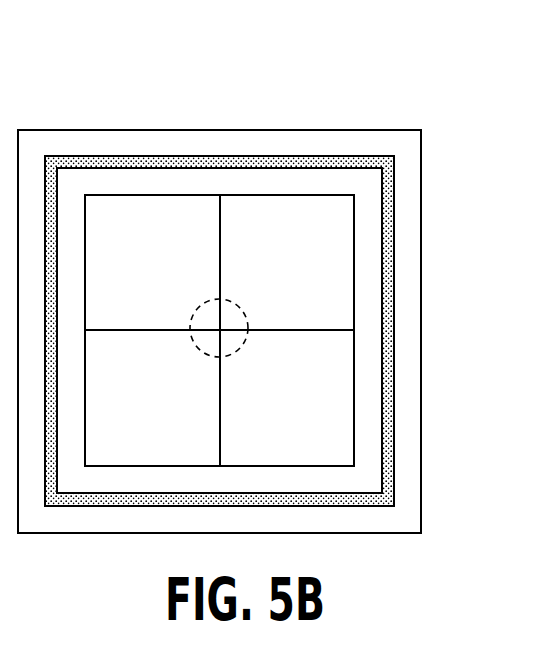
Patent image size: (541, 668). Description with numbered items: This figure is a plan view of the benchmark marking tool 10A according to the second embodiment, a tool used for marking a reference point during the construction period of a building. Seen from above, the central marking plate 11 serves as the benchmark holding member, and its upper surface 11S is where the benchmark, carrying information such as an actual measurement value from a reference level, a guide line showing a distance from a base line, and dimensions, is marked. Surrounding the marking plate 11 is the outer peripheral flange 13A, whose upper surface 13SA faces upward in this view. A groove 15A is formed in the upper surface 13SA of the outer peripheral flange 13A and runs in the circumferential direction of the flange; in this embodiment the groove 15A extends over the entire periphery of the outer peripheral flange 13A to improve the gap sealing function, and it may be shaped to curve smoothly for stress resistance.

The benchmark marking tool 10A is at (341, 84).
The marking plate 11 is at (354, 261).
The upper surface 11S is at (306, 283).
The outer peripheral flange 13A is at (259, 331).
The upper surface 13SA is at (413, 341).
The groove 15A is at (393, 385).